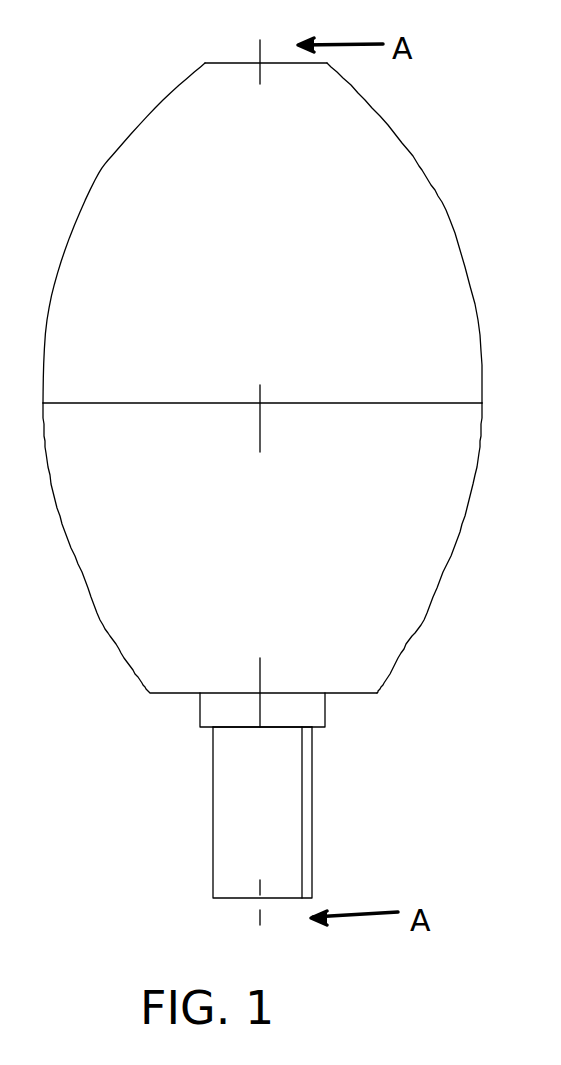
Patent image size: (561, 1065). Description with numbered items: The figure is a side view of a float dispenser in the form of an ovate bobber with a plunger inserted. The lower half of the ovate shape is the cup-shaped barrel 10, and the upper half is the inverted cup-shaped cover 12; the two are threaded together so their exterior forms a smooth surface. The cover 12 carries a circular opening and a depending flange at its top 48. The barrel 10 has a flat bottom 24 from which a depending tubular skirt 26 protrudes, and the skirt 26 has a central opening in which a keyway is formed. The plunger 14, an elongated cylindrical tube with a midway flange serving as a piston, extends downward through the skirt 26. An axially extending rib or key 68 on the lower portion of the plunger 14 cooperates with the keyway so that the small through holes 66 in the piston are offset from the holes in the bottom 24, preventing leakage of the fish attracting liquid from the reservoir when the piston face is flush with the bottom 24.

The barrel 10 is at (435, 540).
The cover 12 is at (430, 232).
The top of cover 48 is at (208, 63).
The flat bottom 24 is at (353, 695).
The tubular skirt 26 is at (318, 723).
The plunger 14 is at (228, 815).
The key 68 is at (305, 872).
The through holes 66 is at (541, 1052).